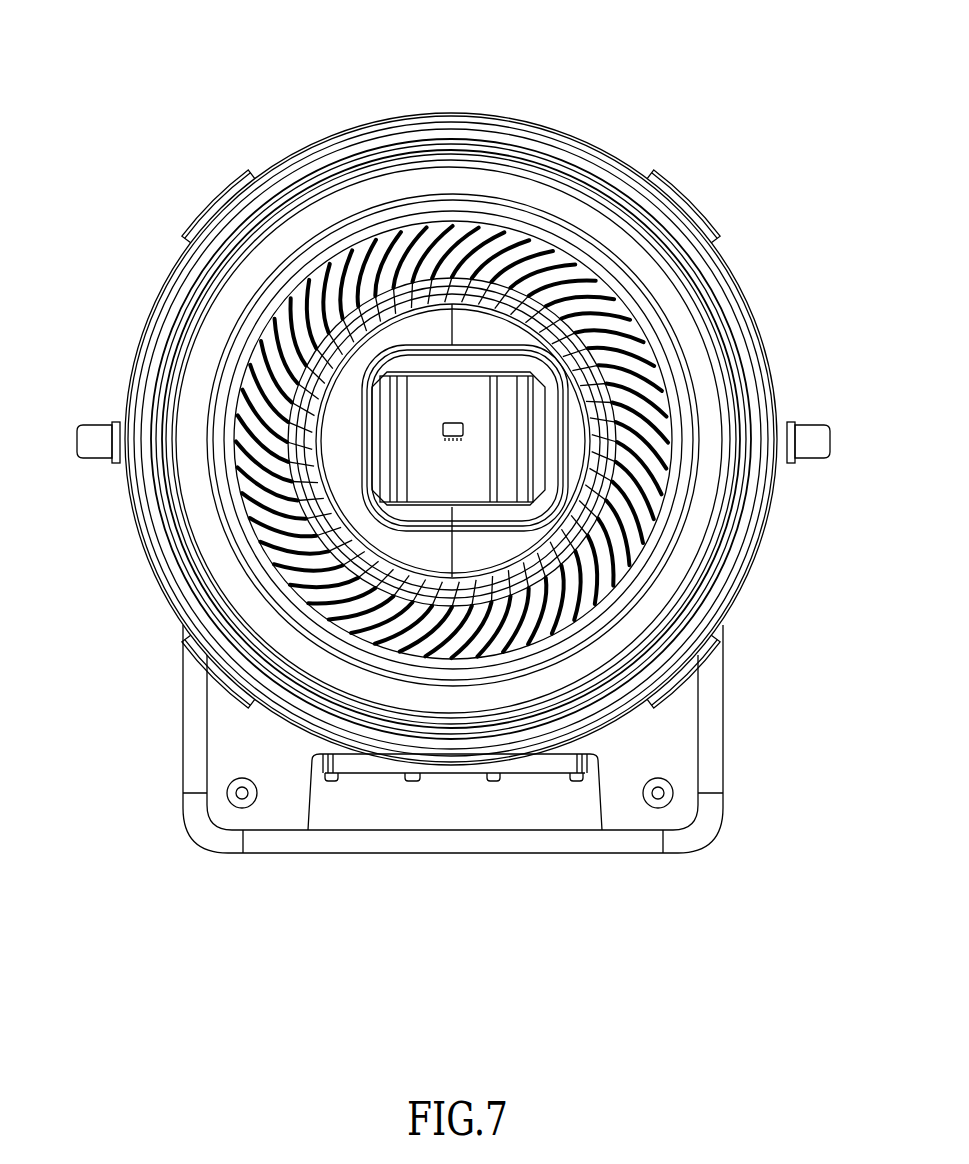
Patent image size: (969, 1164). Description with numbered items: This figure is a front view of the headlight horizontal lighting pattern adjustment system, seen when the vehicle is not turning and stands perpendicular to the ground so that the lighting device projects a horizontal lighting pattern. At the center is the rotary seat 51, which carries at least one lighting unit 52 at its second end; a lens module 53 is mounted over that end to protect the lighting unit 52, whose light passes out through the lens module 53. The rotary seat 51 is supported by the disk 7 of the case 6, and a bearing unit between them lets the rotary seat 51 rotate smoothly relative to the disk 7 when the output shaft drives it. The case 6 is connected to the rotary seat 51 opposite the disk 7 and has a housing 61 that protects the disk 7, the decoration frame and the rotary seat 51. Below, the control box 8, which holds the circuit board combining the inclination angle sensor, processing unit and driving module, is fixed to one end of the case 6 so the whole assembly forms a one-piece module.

The case 6 is at (789, 422).
The disk 7 is at (499, 236).
The control box 8 is at (712, 760).
The rotary seat 51 is at (262, 444).
The lighting unit 52 is at (452, 420).
The lens module 53 is at (507, 387).
The housing 61 is at (728, 315).